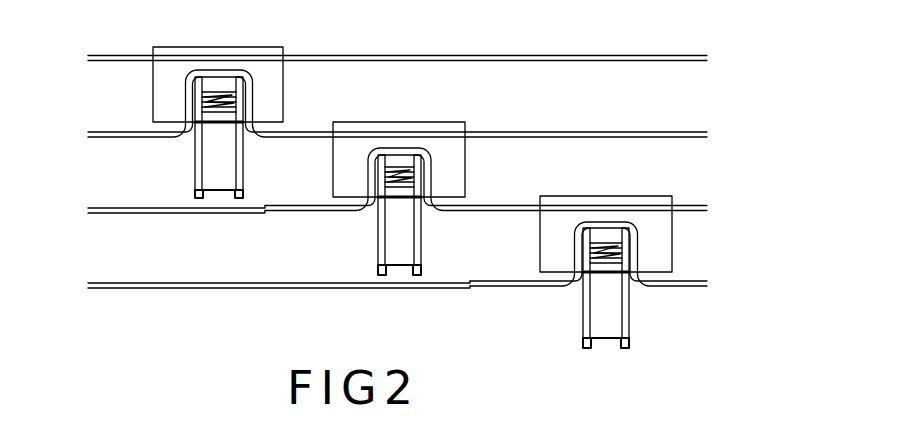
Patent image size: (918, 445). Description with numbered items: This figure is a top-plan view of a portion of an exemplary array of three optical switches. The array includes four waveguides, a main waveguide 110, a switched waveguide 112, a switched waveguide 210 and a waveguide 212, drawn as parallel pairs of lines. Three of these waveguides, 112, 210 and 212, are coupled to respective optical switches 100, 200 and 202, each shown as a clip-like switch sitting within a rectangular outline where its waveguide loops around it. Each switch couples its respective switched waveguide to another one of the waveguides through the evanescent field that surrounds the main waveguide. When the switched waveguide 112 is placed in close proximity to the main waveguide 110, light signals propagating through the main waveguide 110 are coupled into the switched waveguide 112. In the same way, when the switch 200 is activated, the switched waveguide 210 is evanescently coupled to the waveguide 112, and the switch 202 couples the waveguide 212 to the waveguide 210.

The optical switch 100 is at (248, 32).
The optical switch 200 is at (432, 110).
The optical switch 202 is at (645, 188).
The main waveguide 110 is at (706, 57).
The switched waveguide 112 is at (706, 134).
The switched waveguide 210 is at (706, 208).
The waveguide 212 is at (706, 285).